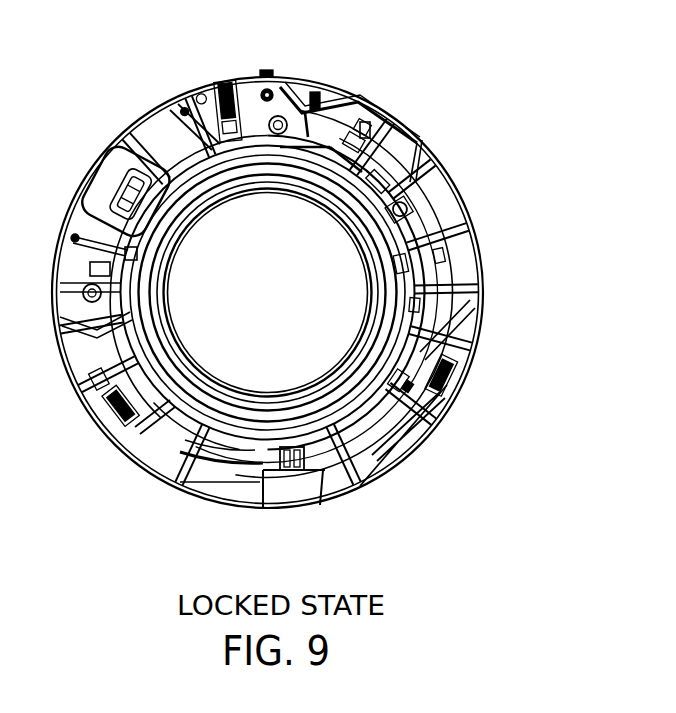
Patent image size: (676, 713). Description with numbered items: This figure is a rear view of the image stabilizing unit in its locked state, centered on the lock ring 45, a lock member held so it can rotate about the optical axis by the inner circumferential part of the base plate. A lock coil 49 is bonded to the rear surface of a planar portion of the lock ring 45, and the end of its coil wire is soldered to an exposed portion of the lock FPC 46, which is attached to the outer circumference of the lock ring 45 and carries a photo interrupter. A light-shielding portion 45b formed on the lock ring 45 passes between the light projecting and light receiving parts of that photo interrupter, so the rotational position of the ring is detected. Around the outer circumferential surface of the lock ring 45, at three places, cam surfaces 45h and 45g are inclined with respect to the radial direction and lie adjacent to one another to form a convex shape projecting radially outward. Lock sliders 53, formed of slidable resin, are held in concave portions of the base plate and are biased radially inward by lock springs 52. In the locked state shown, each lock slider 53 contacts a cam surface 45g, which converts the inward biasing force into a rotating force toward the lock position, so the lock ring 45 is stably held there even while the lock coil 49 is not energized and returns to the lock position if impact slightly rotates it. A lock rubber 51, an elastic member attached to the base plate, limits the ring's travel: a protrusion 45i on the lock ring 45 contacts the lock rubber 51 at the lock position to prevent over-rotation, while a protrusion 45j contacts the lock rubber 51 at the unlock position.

The lock ring 45 is at (397, 447).
The light-shielding portion 45b is at (340, 493).
The cam surface 45g is at (215, 85).
The cam surface 45h is at (210, 150).
The protrusion 45i is at (405, 185).
The protrusion 45j is at (383, 180).
The lock FPC 46 is at (290, 470).
The lock coil 49 is at (133, 140).
The lock rubber 51 is at (420, 147).
The lock spring 52 is at (262, 73).
The lock slider 53 is at (303, 73).